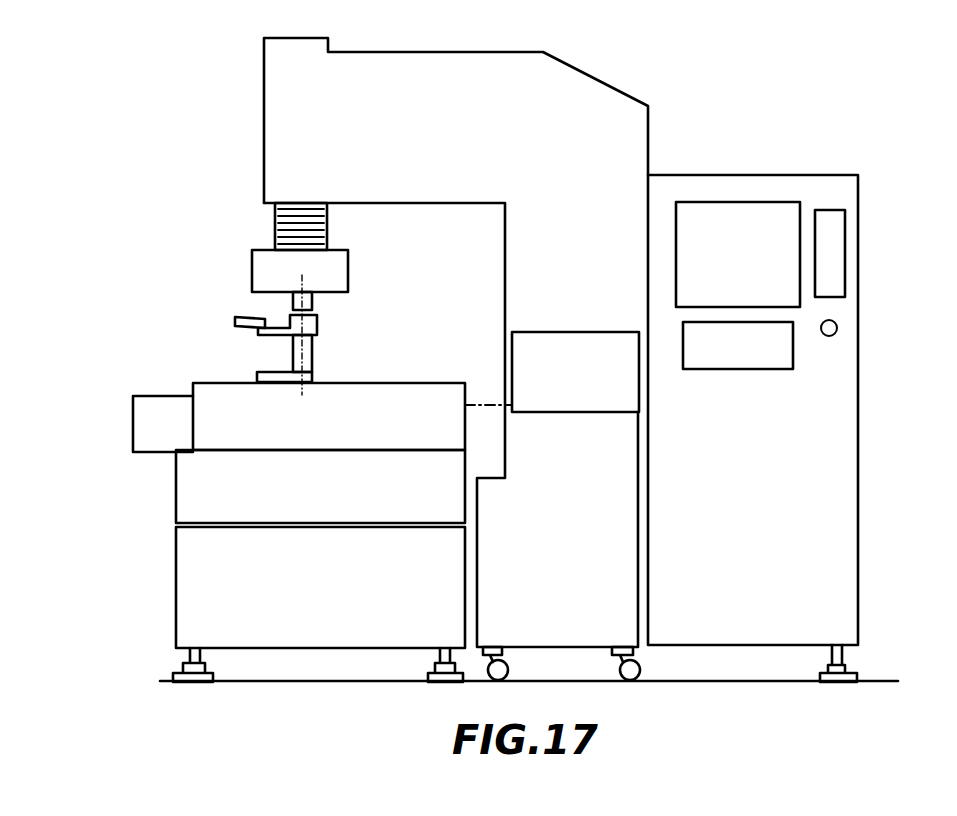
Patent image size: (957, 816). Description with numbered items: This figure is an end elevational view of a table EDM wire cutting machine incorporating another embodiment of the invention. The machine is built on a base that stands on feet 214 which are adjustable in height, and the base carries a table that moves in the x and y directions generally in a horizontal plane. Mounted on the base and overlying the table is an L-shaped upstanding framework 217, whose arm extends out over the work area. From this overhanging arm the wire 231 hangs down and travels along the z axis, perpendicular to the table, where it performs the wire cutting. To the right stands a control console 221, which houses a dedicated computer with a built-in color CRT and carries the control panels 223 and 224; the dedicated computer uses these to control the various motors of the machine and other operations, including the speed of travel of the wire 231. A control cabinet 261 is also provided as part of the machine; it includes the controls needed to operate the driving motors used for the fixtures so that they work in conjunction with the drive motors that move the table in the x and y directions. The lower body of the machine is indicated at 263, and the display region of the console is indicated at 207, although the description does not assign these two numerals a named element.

The L-shaped upstanding framework 217 is at (446, 143).
The display 207 is at (758, 274).
The control panel 224 is at (762, 361).
The control cabinet 261 is at (592, 390).
The base 263 is at (336, 603).
The wire 231 is at (292, 305).
The control console 221 is at (880, 213).
The control panel 223 is at (832, 275).
The feet 214 is at (846, 668).